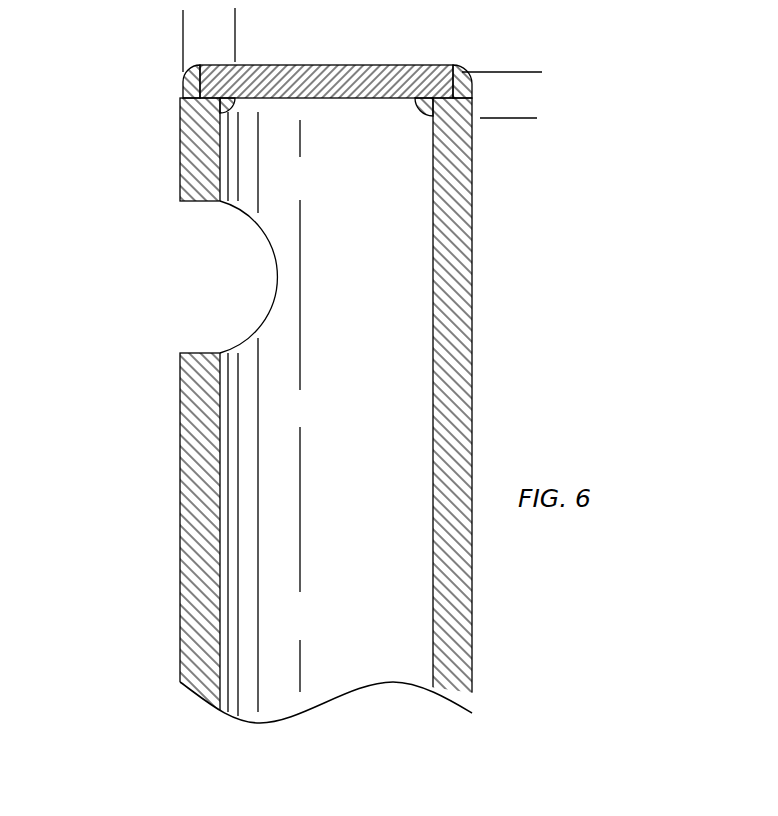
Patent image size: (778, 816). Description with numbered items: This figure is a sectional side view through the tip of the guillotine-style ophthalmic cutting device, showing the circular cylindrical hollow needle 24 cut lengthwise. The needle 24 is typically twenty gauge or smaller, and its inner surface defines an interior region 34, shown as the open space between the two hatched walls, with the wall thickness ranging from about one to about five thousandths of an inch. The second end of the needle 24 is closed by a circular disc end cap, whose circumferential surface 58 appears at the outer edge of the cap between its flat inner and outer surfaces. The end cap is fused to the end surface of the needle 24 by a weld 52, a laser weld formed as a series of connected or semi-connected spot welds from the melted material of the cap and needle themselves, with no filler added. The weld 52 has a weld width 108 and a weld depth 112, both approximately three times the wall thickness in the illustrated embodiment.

The needle 24 is at (460, 275).
The interior region 34 is at (387, 333).
The weld 52 is at (160, 126).
The circumferential surface 58 is at (455, 68).
The weld width 108 is at (280, 25).
The weld depth 112 is at (515, 40).